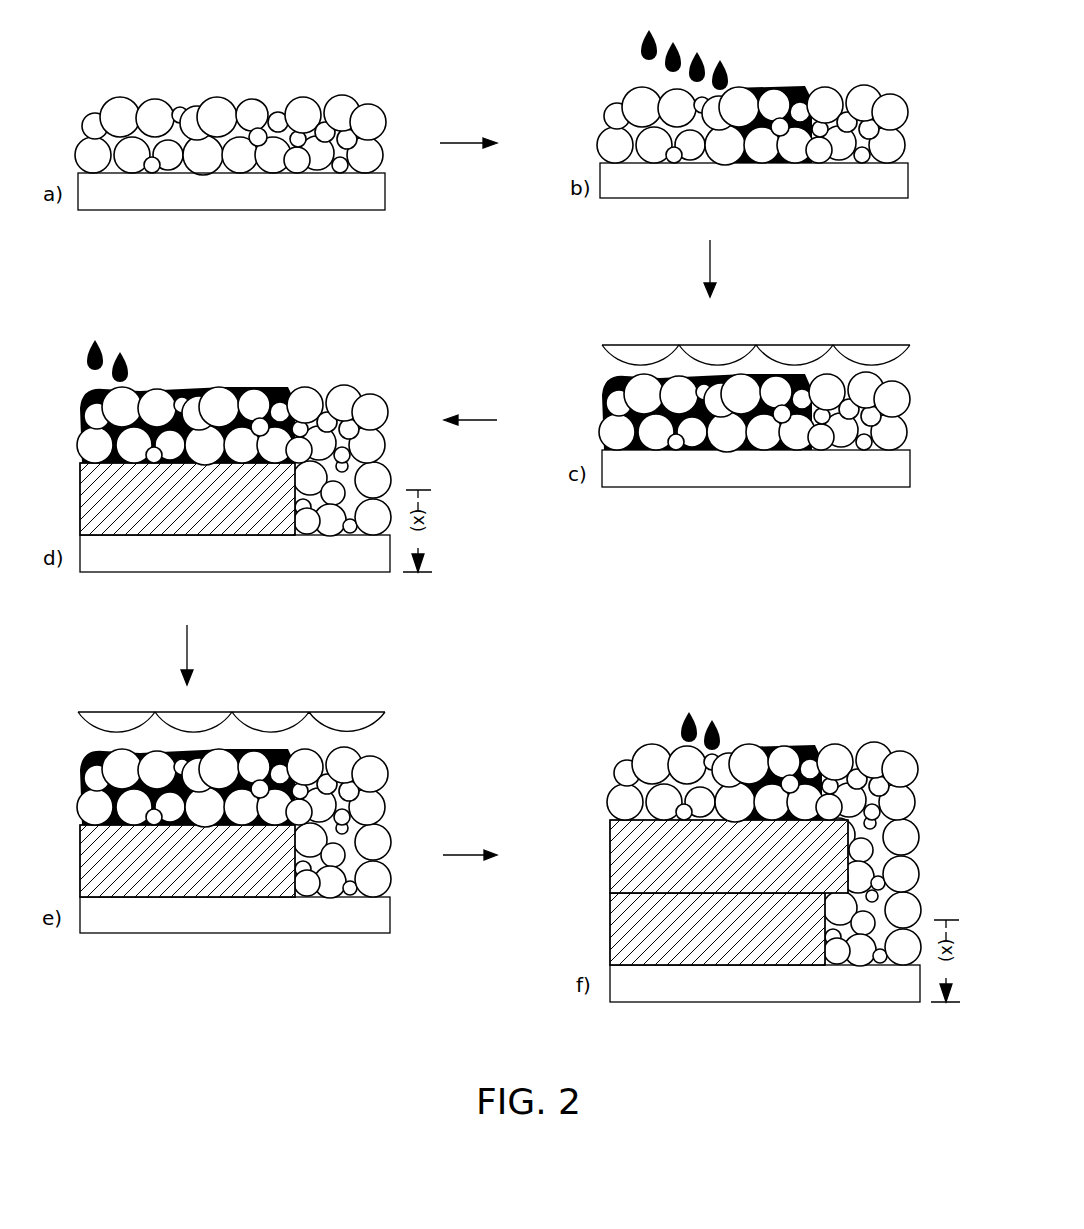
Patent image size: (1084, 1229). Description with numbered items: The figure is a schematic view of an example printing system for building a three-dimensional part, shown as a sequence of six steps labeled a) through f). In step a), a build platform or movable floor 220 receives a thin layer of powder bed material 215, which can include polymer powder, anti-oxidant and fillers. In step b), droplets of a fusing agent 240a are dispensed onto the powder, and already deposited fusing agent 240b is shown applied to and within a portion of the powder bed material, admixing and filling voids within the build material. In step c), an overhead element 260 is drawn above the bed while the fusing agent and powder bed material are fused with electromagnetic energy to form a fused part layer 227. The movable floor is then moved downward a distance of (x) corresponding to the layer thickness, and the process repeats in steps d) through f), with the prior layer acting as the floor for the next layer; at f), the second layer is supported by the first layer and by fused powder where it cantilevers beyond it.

The powder bed material 215 is at (118, 112).
The movable floor 220 is at (251, 201).
The droplets of fusing agent 240a is at (640, 40).
The already deposited fusing agent 240b is at (760, 88).
The mask 260 is at (793, 357).
The fused part layer 227 is at (193, 483).